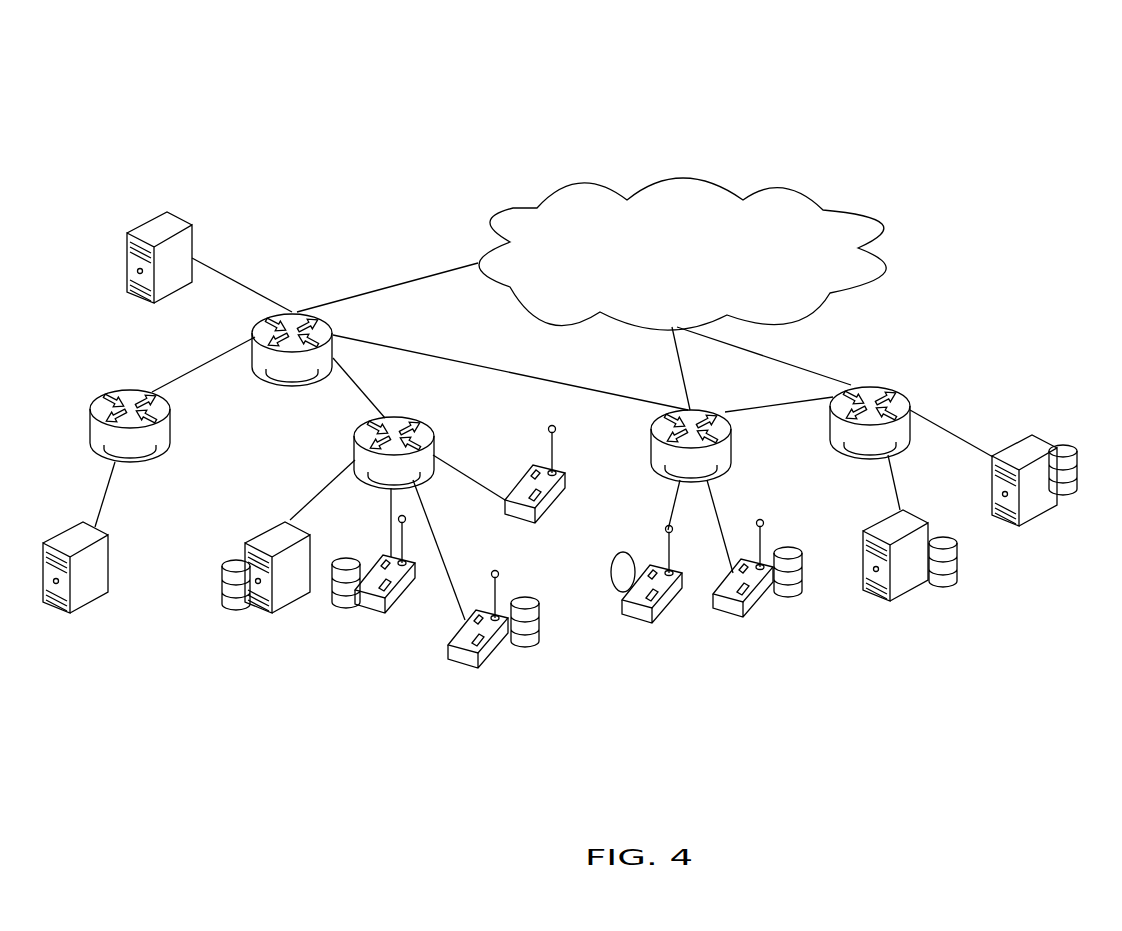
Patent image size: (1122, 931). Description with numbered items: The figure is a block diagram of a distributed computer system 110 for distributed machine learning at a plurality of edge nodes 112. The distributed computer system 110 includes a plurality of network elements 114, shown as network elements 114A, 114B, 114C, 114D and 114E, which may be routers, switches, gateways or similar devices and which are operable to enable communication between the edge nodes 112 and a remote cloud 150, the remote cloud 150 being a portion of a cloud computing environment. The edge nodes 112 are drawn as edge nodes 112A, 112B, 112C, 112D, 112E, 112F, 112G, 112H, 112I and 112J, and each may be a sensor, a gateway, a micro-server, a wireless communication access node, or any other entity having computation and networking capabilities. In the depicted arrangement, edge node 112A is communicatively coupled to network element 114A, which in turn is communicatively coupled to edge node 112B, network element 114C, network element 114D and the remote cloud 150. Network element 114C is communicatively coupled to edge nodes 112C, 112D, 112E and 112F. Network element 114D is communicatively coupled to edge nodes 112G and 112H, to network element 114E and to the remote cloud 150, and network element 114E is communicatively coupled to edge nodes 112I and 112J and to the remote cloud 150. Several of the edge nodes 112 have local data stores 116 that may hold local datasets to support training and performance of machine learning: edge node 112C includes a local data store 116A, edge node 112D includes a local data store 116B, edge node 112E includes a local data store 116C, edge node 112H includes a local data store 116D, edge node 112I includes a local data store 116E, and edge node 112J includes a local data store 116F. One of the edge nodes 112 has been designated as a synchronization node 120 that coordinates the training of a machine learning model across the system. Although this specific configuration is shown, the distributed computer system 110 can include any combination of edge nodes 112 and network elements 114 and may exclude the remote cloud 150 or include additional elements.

The distributed computer system 110 is at (590, 102).
The edge nodes 112 is at (128, 118).
The edge node 112A is at (93, 603).
The edge node 112B is at (160, 212).
The edge node 112C is at (287, 610).
The edge node 112D is at (405, 598).
The edge node 112E is at (463, 664).
The edge node 112F is at (568, 490).
The edge node 112G is at (633, 618).
The edge node 112H is at (723, 620).
The edge node 112I is at (903, 598).
The edge node 112J is at (1030, 432).
The network elements 114 is at (292, 258).
The network element 114A is at (145, 463).
The network element 114B is at (291, 382).
The network element 114C is at (415, 420).
The network element 114D is at (723, 470).
The network element 114E is at (843, 447).
The local data stores 116 is at (521, 741).
The local data store 116A is at (236, 610).
The local data store 116B is at (341, 610).
The local data store 116C is at (528, 648).
The local data store 116D is at (784, 598).
The local data store 116E is at (947, 590).
The local data store 116F is at (1063, 497).
The synchronization node 120 is at (610, 570).
The remote cloud 150 is at (513, 207).